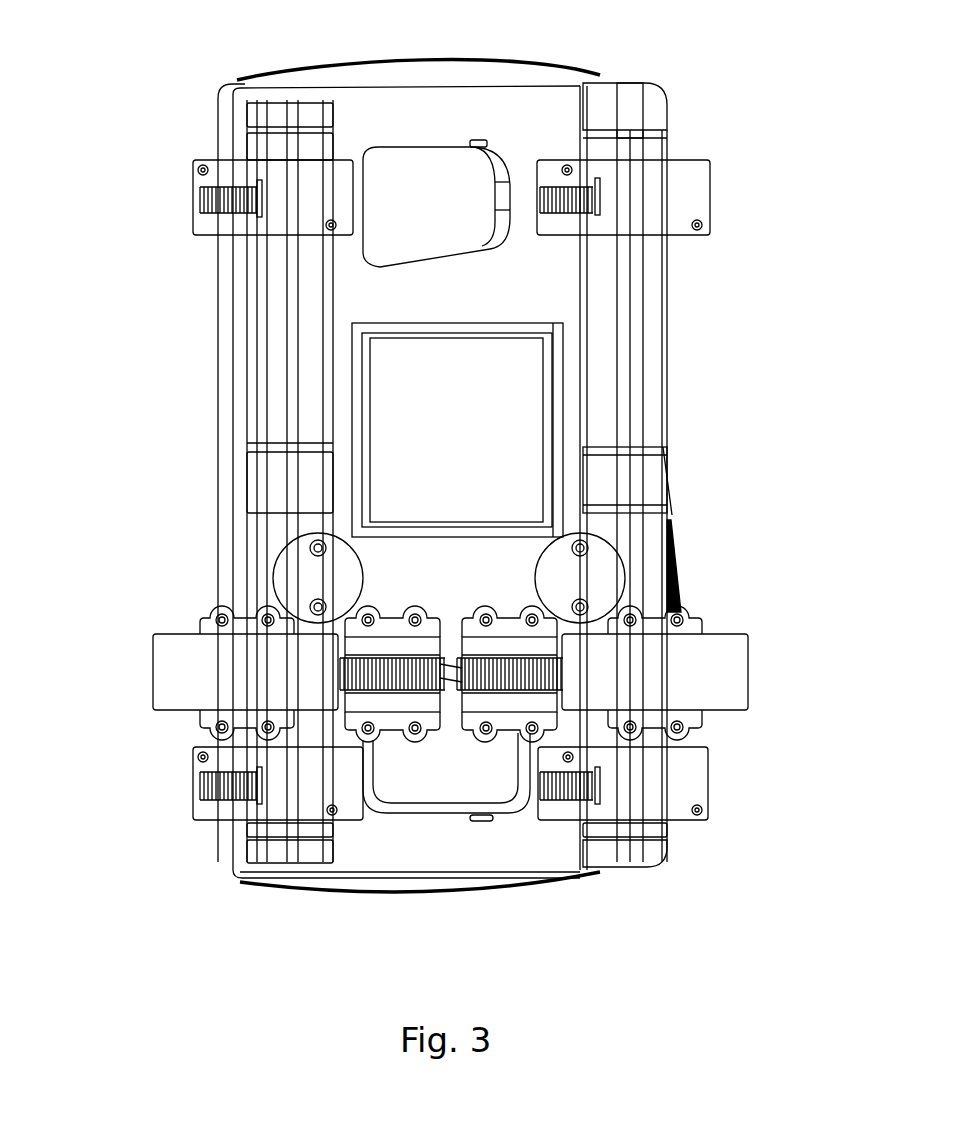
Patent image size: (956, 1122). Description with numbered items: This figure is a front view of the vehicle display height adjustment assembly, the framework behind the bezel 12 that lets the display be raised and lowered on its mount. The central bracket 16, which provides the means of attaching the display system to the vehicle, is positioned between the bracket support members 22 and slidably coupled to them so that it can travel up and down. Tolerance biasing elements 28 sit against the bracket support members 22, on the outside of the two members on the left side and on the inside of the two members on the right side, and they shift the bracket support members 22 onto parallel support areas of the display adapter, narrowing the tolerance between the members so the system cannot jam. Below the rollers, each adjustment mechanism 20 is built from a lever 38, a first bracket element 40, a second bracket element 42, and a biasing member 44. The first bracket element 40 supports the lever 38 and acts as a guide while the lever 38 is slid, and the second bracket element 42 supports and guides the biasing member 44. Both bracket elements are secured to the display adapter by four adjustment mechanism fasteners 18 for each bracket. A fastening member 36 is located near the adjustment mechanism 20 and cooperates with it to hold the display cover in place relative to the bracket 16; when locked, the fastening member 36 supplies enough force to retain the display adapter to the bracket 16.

The bezel 12 is at (240, 78).
The bracket 16 is at (395, 768).
The adjustment mechanism fasteners 18 is at (687, 750).
The adjustment mechanism 20 is at (685, 595).
The bracket support members 22 is at (617, 173).
The tolerance biasing elements 28 is at (220, 187).
The fastening member 36 is at (273, 572).
The lever 38 is at (198, 697).
The first bracket element 40 is at (203, 615).
The second bracket element 42 is at (465, 712).
The biasing member 44 is at (540, 697).